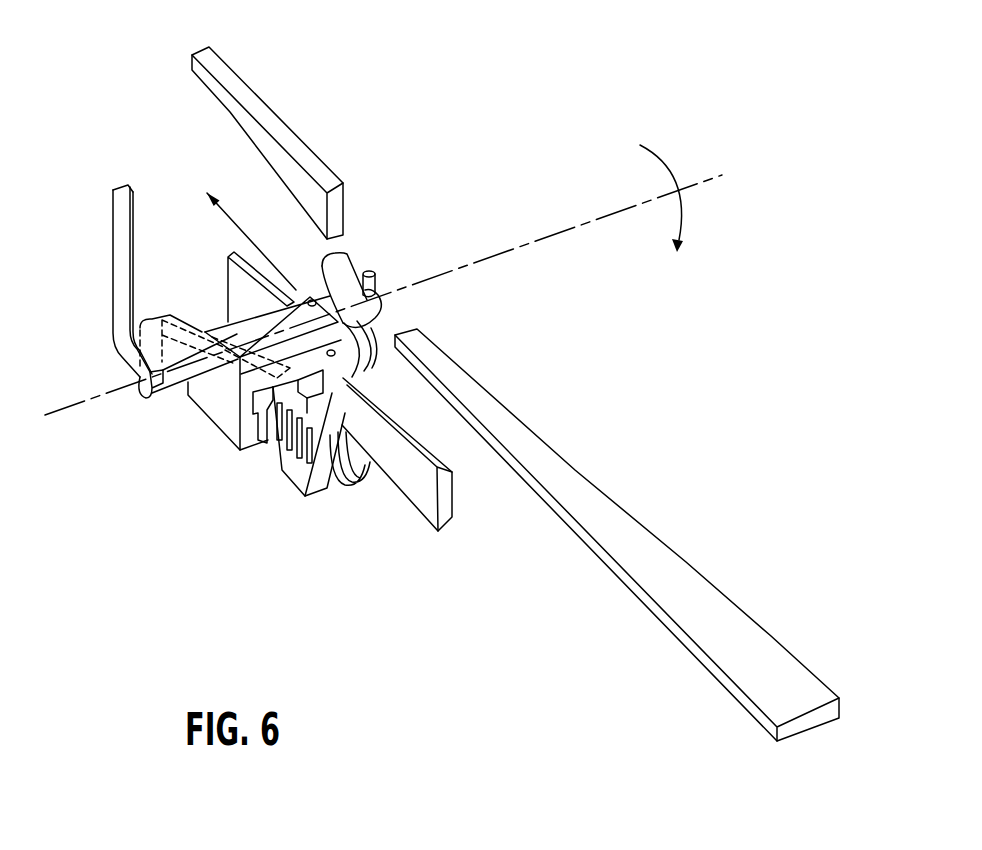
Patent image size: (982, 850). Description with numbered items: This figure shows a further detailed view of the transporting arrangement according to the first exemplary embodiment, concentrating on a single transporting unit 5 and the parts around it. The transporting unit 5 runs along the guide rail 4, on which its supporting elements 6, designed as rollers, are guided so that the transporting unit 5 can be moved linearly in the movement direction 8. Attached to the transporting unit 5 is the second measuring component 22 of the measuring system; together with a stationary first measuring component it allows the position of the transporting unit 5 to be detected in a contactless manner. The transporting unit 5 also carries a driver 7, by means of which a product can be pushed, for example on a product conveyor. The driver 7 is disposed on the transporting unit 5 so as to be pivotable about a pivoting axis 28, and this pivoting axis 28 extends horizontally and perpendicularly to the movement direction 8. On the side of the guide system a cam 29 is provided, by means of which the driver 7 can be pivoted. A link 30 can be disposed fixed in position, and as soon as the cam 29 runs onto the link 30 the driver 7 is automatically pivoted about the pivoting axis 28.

The guide rail 4 is at (418, 495).
The transporting unit 5 is at (204, 421).
The supporting element 6 is at (367, 480).
The driver 7 is at (127, 260).
The movement direction 8 is at (235, 227).
The second measuring component 22 is at (283, 440).
The pivoting axis 28 is at (555, 240).
The cam 29 is at (325, 262).
The link 30 is at (313, 211).